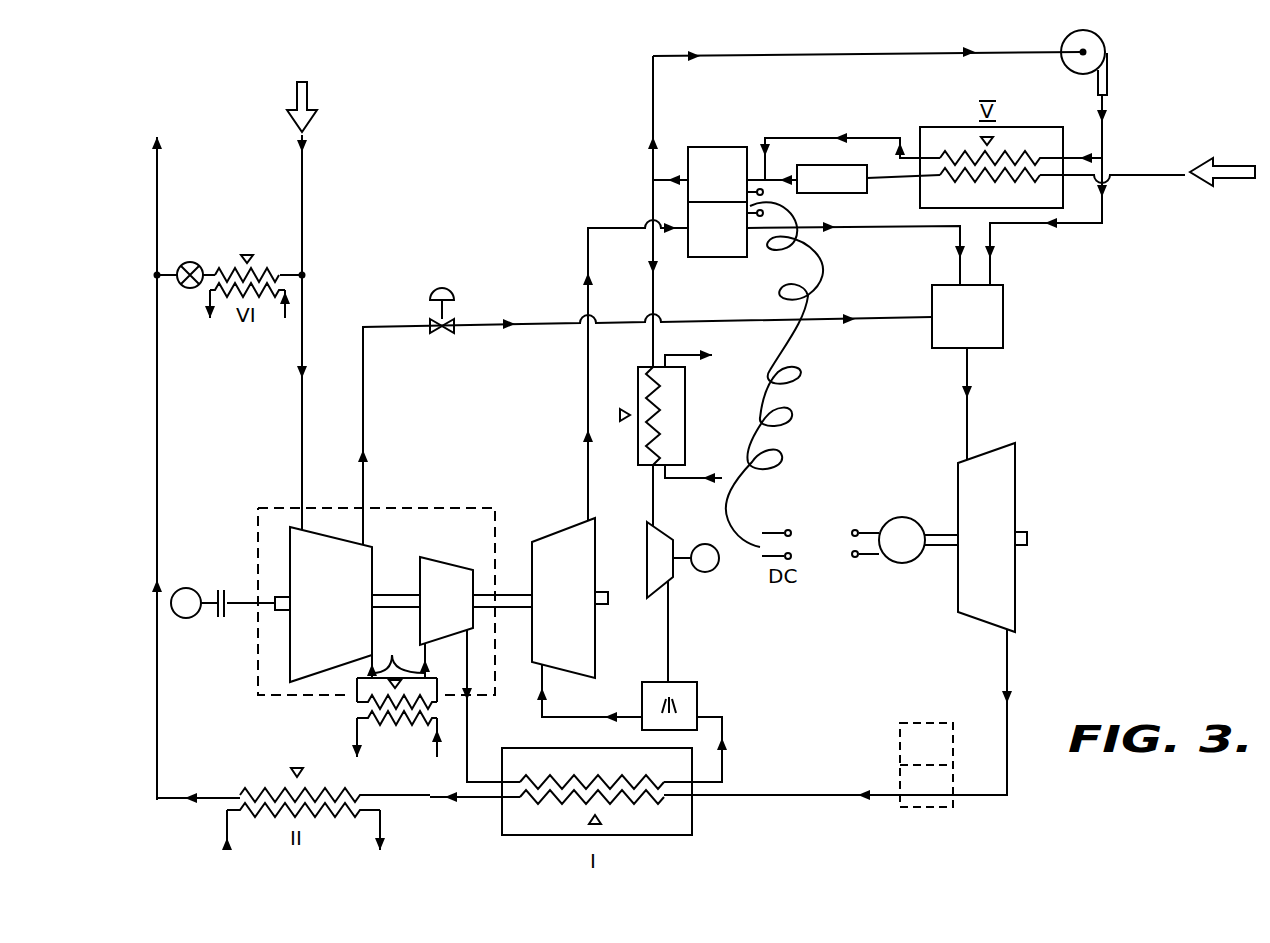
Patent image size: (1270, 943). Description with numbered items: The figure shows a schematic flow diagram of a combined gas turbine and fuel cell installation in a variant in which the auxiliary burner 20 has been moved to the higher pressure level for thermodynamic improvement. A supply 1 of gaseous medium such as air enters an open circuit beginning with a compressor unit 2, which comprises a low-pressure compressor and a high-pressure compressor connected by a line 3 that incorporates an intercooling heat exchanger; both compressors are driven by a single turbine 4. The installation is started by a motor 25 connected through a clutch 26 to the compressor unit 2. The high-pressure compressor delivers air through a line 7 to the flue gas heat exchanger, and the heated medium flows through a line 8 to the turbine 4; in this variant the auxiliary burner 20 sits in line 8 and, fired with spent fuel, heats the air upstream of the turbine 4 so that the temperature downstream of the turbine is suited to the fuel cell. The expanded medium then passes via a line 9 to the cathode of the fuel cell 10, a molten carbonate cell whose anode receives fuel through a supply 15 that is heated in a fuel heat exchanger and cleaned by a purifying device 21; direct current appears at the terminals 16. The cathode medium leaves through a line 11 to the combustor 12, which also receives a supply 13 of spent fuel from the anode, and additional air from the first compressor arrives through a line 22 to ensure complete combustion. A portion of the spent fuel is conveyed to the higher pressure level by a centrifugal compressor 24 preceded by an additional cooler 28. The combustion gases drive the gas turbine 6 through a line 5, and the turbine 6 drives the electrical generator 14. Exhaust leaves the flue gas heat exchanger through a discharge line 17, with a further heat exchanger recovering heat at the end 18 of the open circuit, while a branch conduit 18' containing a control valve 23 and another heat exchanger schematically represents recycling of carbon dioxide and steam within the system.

The supply of gaseous medium 1 is at (304, 210).
The compressor unit 2 is at (257, 572).
The line 3 is at (397, 689).
The turbine 4 is at (596, 556).
The line 5 is at (1007, 723).
The gas turbine 6 is at (1015, 472).
The line 7 is at (467, 733).
The line 8 is at (567, 717).
The line 9 is at (588, 400).
The fuel cell 10 is at (737, 247).
The line 11 is at (872, 227).
The combustor 12 is at (1003, 332).
The supply of spent fuel 13 is at (824, 57).
The electrical generator 14 is at (905, 563).
The supply of fuel 15 is at (1128, 176).
The terminals 16 is at (756, 193).
The discharge line 17 is at (455, 798).
The end of the open circuit 18 is at (174, 470).
The branch conduit 18' is at (212, 292).
The auxiliary burner 20 is at (697, 697).
The purifying device 21 is at (828, 193).
The line 22 is at (364, 478).
The control valve 23 is at (190, 262).
The centrifugal compressor 24 is at (1098, 52).
The motor 25 is at (186, 618).
The clutch 26 is at (215, 597).
The additional cooler 28 is at (686, 407).